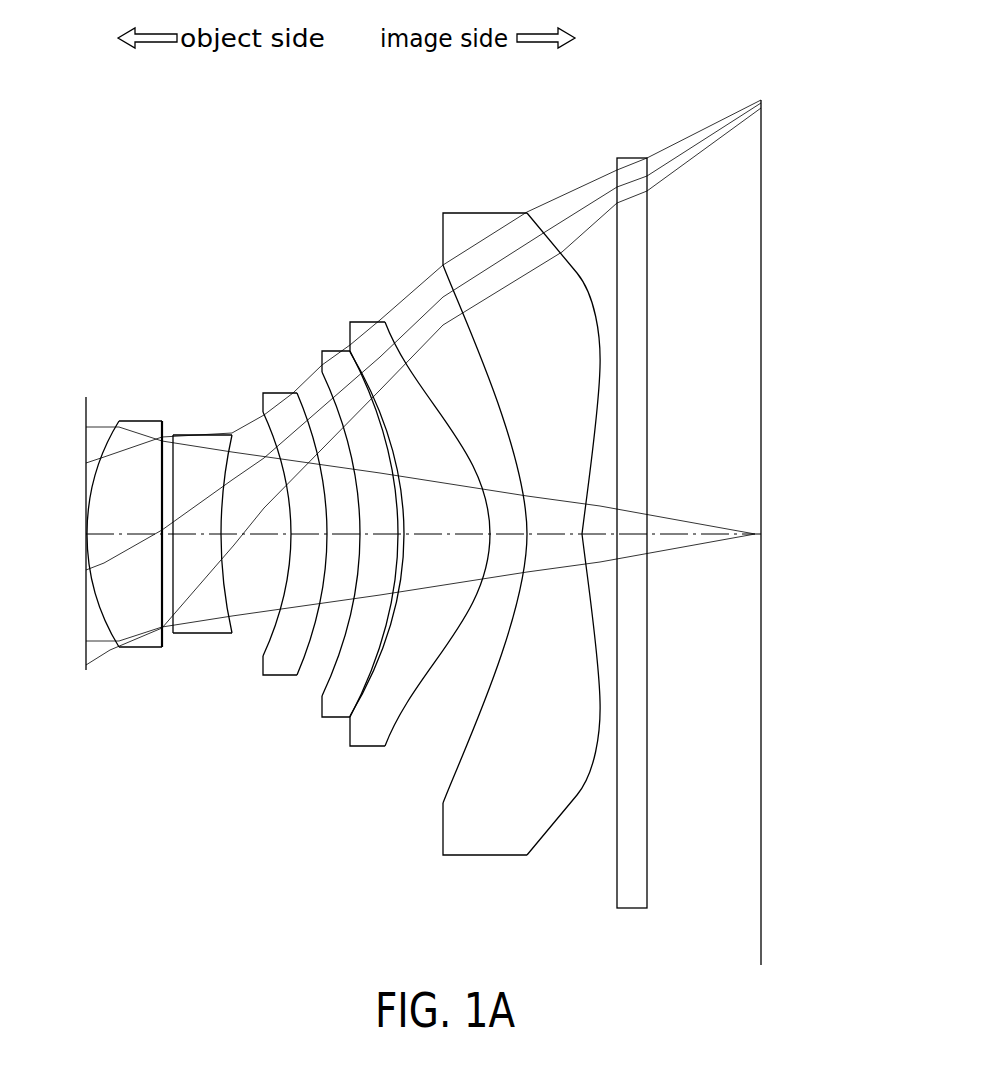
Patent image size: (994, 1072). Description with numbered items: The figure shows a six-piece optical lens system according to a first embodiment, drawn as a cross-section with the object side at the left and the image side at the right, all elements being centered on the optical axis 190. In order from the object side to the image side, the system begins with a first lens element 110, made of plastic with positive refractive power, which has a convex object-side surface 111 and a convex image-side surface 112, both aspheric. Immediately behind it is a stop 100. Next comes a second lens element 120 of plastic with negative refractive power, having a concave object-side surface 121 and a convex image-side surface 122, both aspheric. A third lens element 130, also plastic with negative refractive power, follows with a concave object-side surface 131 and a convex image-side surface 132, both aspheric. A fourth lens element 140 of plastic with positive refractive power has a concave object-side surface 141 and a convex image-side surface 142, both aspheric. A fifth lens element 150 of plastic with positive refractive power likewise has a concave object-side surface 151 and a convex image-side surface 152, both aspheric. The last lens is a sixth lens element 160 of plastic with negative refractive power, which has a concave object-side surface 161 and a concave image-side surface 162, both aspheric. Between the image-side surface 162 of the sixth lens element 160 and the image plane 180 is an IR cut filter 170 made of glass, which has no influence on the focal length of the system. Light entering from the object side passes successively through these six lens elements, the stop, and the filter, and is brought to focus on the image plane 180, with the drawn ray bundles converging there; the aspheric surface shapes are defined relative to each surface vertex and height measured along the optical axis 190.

The stop 100 is at (162, 415).
The first lens element 110 is at (111, 537).
The object-side surface of the first lens element 111 is at (110, 640).
The image-side surface of the first lens element 112 is at (161, 583).
The second lens element 120 is at (197, 539).
The object-side surface of the second lens element 121 is at (172, 605).
The image-side surface of the second lens element 122 is at (229, 600).
The third lens element 130 is at (282, 531).
The object-side surface of the third lens element 131 is at (272, 634).
The image-side surface of the third lens element 132 is at (308, 672).
The fourth lens element 140 is at (333, 530).
The object-side surface of the fourth lens element 141 is at (329, 678).
The image-side surface of the fourth lens element 142 is at (362, 692).
The fifth lens element 150 is at (413, 516).
The object-side surface of the fifth lens element 151 is at (360, 700).
The image-side surface of the fifth lens element 152 is at (417, 706).
The sixth lens element 160 is at (491, 527).
The object-side surface of the sixth lens element 161 is at (456, 762).
The image-side surface of the sixth lens element 162 is at (549, 830).
The IR cut filter 170 is at (628, 157).
The image plane 180 is at (759, 152).
The optical axis 190 is at (693, 535).